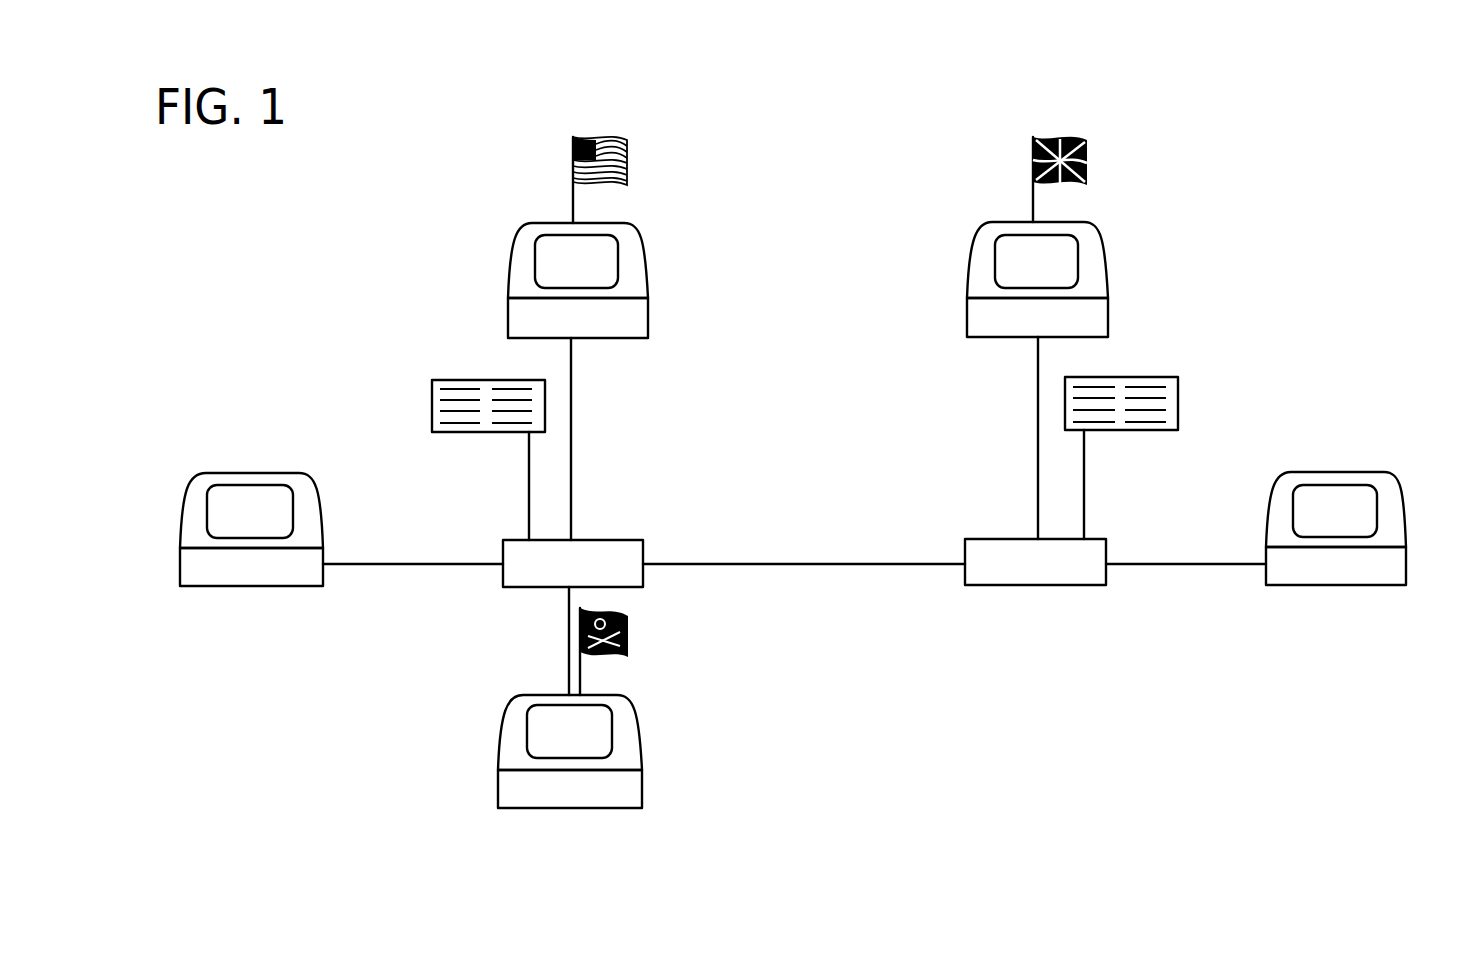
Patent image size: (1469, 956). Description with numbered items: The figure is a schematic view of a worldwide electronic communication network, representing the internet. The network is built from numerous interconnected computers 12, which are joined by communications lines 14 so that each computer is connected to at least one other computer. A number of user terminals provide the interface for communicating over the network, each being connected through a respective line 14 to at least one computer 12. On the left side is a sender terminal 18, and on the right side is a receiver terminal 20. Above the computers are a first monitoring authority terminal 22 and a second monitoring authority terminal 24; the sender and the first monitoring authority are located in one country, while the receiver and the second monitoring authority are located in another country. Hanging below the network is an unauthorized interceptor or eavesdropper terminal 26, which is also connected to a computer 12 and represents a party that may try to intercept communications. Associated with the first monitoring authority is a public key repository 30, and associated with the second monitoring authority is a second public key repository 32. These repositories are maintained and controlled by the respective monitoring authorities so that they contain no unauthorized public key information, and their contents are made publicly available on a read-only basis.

The interconnected computer 12 is at (558, 576).
The communications line 14 is at (528, 520).
The sender terminal 18 is at (183, 503).
The receiver terminal 20 is at (1407, 507).
The first monitoring authority terminal 22 is at (527, 222).
The second monitoring authority terminal 24 is at (967, 260).
The unauthorized interceptor terminal 26 is at (642, 790).
The public key repository 30 is at (432, 398).
The second public key repository 32 is at (1178, 403).